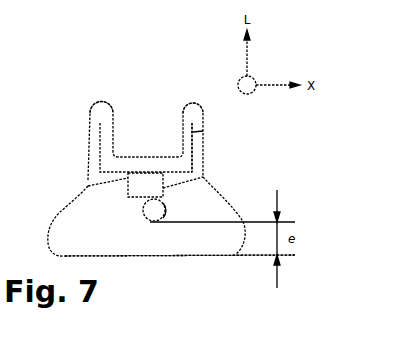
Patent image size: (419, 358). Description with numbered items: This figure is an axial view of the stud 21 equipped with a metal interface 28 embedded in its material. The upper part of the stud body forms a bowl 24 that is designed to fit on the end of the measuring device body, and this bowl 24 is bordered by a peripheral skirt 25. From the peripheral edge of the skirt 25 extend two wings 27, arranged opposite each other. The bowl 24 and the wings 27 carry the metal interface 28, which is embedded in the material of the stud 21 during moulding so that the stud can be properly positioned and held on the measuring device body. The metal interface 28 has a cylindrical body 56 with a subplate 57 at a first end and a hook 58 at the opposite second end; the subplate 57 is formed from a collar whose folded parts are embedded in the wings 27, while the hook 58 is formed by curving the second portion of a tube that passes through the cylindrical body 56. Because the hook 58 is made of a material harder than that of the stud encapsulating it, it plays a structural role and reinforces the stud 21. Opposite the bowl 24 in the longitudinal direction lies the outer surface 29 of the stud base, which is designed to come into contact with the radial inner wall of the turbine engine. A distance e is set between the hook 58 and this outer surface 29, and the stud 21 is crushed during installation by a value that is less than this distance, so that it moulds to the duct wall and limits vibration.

The stud 21 is at (70, 158).
The bowl 24 is at (142, 128).
The peripheral skirt 25 is at (204, 152).
The wings 27 is at (100, 103).
The metal interface 28 is at (121, 180).
The outer surface 29 is at (195, 258).
The cylindrical body 56 is at (207, 177).
The subplate 57 is at (203, 131).
The hook 58 is at (146, 210).